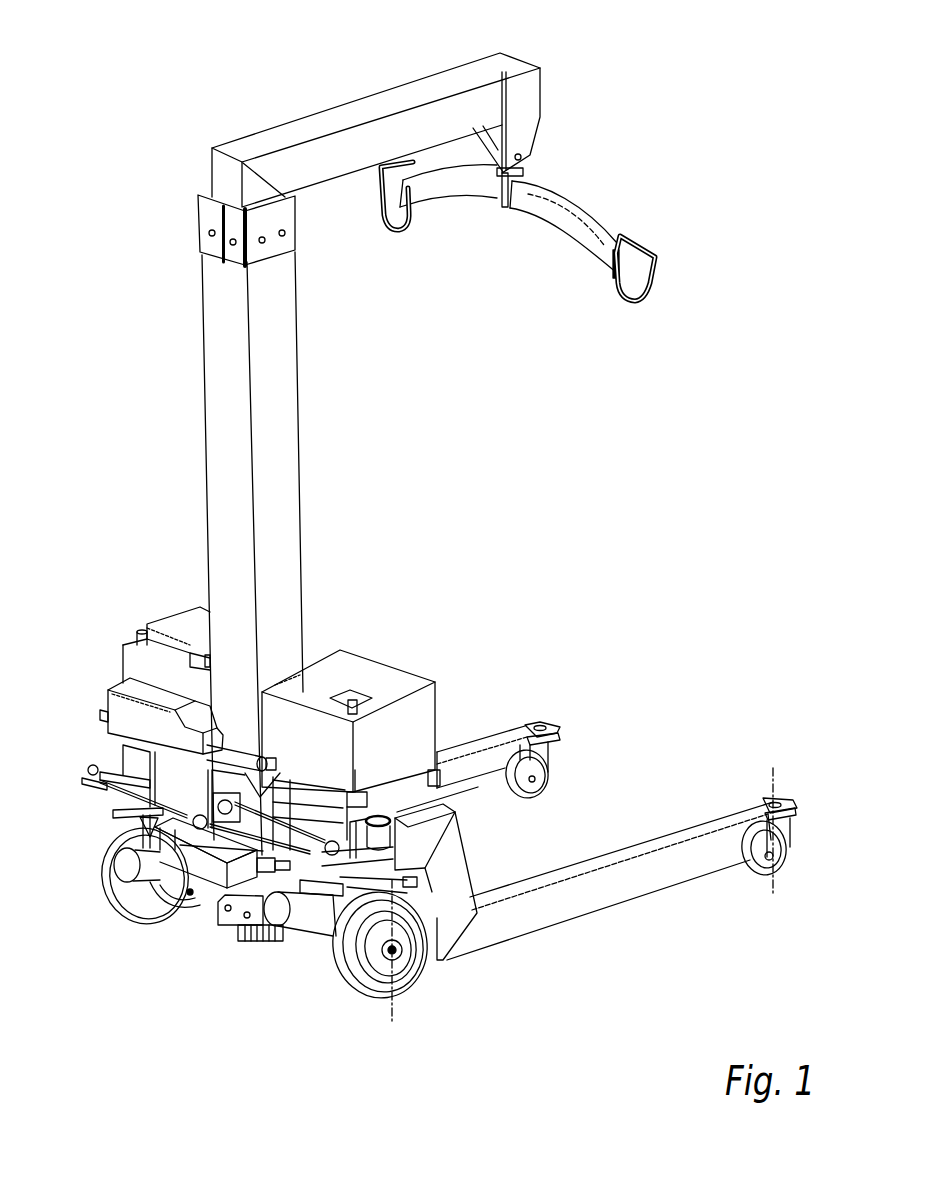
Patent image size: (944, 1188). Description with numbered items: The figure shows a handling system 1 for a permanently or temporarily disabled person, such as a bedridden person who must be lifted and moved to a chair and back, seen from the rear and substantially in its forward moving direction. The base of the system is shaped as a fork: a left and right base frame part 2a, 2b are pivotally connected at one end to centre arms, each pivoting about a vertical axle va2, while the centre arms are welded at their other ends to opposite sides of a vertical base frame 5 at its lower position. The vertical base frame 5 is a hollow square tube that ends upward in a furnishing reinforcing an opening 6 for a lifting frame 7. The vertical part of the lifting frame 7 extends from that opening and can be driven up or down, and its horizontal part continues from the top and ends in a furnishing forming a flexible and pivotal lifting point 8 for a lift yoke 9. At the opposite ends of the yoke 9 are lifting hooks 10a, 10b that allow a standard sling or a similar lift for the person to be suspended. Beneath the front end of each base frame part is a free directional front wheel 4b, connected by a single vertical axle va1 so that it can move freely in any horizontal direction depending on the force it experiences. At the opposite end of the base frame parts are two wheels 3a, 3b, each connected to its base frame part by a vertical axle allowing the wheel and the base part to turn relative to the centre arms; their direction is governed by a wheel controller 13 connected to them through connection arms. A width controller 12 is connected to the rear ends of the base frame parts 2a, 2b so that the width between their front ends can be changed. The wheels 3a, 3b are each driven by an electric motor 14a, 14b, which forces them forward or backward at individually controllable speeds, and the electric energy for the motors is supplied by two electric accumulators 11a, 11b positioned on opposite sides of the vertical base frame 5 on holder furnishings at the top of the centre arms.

The handling system 1 is at (146, 153).
The left base frame part 2a is at (682, 883).
The right base frame part 2b is at (487, 780).
The wheel 3a is at (392, 1000).
The wheel 3b is at (150, 917).
The front wheel 4b is at (550, 775).
The vertical base frame 5 is at (282, 537).
The opening 6 is at (200, 237).
The lifting frame 7 is at (340, 113).
The lifting point 8 is at (533, 100).
The lift yoke 9 is at (568, 202).
The lifting hook 10a is at (657, 258).
The lifting hook 10b is at (400, 230).
The electric accumulator 11a is at (432, 682).
The electric accumulator 11b is at (130, 663).
The width controller 12 is at (132, 730).
The wheel controller 13 is at (222, 910).
The electric motor 14a is at (308, 927).
The electric motor 14b is at (152, 917).
The vertical axle va1 is at (773, 773).
The vertical axle va2 is at (395, 905).